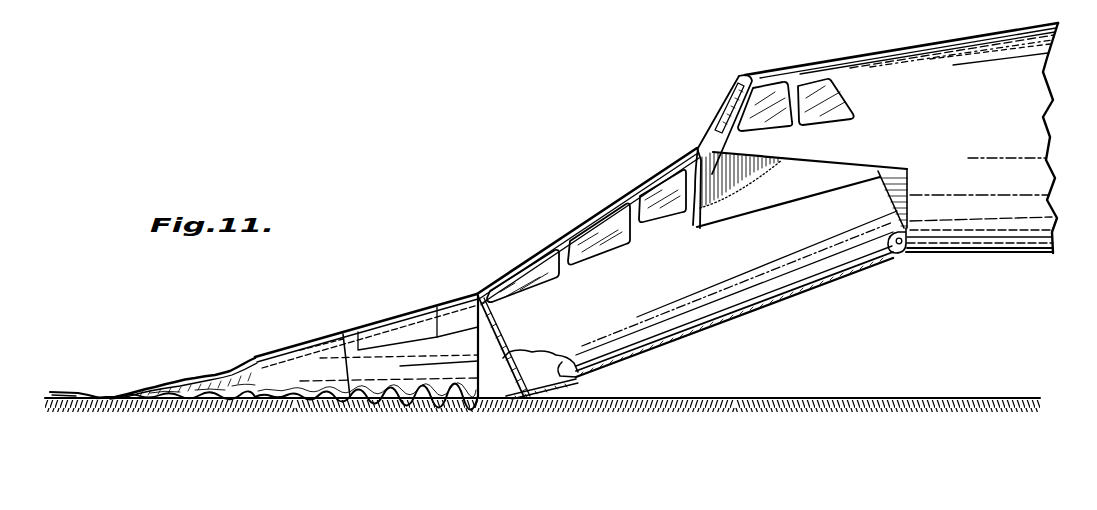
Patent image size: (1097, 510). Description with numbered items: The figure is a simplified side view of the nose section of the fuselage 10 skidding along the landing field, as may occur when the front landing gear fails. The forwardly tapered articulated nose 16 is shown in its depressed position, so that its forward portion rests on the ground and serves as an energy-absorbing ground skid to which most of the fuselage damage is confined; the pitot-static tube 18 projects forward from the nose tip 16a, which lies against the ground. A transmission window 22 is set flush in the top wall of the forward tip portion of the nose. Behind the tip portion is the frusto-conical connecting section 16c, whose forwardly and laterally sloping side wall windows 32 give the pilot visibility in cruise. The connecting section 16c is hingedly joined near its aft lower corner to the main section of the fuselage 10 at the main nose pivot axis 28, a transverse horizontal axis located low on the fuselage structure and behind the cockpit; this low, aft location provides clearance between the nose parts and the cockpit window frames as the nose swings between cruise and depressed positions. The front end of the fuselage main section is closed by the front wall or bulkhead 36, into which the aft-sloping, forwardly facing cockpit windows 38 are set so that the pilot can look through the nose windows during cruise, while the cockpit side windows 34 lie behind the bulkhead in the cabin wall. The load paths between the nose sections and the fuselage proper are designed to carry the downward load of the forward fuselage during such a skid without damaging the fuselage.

The fuselage 10 is at (899, 44).
The nose 16 is at (262, 338).
The nose tip 16a is at (104, 394).
The aft nose base or connecting section 16c is at (555, 243).
The pitot-static tube 18 is at (78, 392).
The transmission window 22 is at (398, 315).
The main nose pivot axis 28 is at (900, 254).
The side wall windows 32 is at (529, 285).
The cockpit side windows 34 is at (812, 88).
The front wall or bulkhead 36 is at (703, 146).
The forwardly facing cockpit windows 38 is at (736, 98).